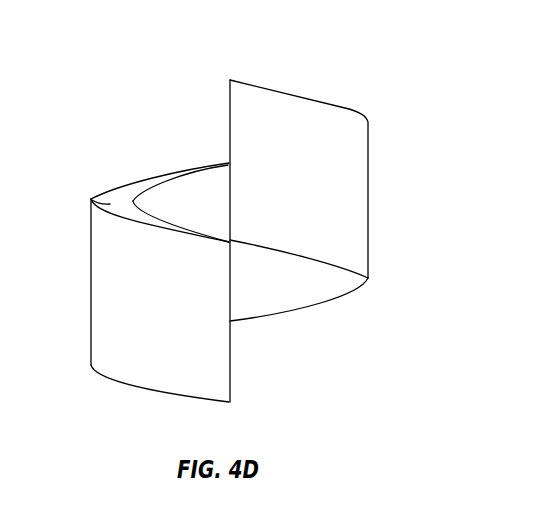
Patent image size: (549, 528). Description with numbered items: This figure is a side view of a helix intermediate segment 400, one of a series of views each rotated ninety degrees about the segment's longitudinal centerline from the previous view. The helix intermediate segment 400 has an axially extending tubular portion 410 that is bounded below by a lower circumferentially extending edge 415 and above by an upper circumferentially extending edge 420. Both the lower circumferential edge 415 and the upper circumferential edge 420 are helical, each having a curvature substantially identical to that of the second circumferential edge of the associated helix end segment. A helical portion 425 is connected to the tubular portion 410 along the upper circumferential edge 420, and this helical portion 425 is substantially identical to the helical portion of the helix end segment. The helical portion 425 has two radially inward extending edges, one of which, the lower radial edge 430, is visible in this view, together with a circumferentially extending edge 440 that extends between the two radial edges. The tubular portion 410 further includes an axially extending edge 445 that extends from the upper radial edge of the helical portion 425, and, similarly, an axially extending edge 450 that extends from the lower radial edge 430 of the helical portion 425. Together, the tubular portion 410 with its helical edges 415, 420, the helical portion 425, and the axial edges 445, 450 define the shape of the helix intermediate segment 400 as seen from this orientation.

The helix intermediate segment 400 is at (313, 78).
The axially extending tubular portion 410 is at (324, 190).
The lower circumferentially extending edge 415 is at (303, 308).
The upper circumferentially extending edge 420 is at (139, 182).
The helical portion 425 is at (92, 199).
The lower radial edge 430 is at (236, 239).
The circumferentially extending edge 440 is at (146, 213).
The axially extending edge 445 is at (230, 120).
The axially extending edge 450 is at (232, 367).